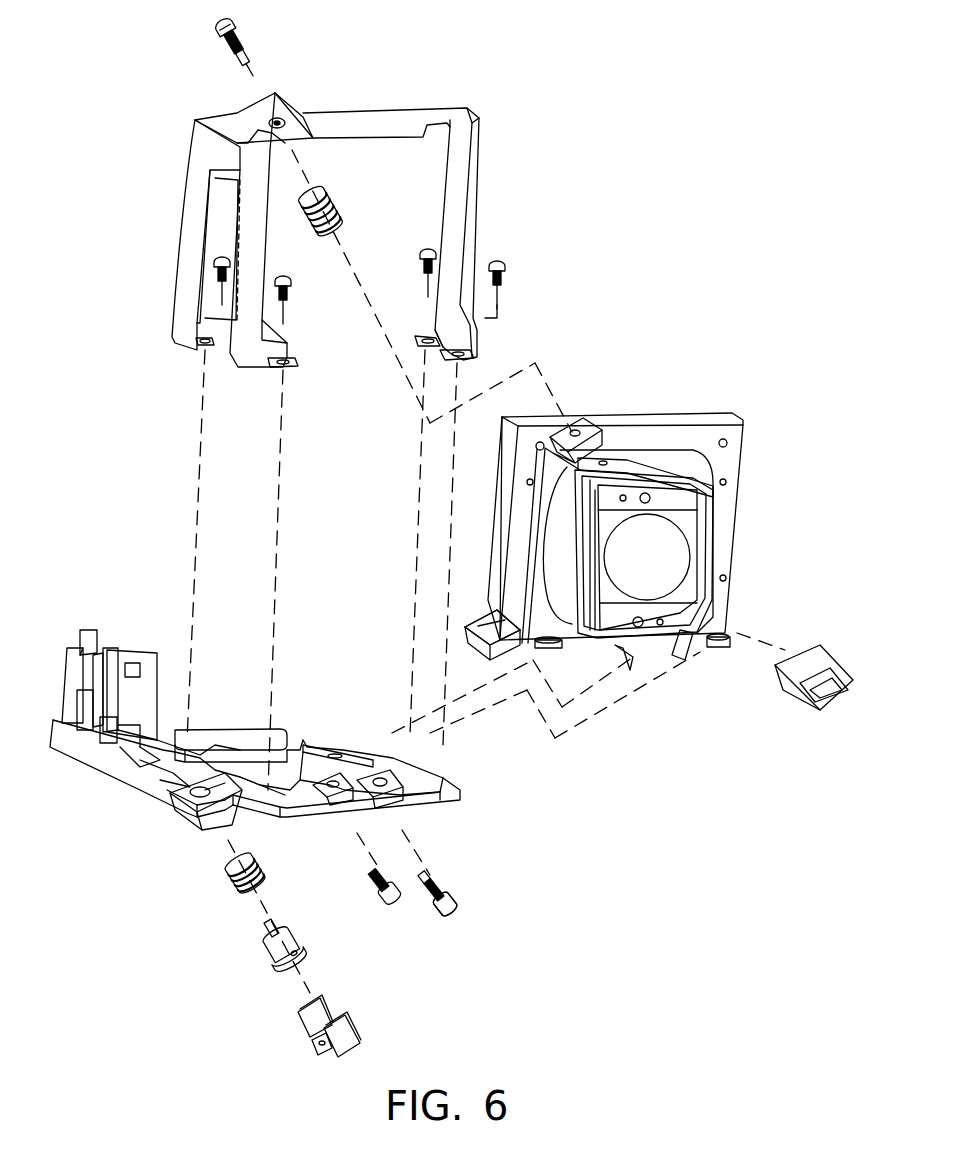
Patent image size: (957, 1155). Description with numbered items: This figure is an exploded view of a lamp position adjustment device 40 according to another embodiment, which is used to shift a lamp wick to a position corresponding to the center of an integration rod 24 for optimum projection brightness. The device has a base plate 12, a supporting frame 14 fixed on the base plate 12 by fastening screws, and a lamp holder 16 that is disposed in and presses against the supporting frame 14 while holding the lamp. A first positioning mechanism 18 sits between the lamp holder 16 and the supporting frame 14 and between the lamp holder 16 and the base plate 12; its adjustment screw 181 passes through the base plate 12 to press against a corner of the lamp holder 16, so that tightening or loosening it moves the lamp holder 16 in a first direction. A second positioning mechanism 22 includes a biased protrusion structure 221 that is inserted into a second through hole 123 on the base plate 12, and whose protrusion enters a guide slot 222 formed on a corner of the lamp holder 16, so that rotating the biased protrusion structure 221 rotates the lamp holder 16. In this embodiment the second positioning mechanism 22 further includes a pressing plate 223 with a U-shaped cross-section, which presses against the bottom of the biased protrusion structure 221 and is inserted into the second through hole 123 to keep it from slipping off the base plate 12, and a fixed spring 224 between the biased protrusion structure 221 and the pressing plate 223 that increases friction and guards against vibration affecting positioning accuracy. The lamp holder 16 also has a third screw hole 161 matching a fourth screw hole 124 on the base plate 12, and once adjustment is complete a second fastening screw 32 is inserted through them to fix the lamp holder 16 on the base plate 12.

The camera module assembly 40 is at (766, 178).
The supporting frame 14 is at (480, 107).
The lamp holder 16 is at (676, 408).
The third screw hole 161 is at (625, 650).
The base plate 12 is at (252, 720).
The fourth screw hole 124 is at (300, 745).
The second through hole 123 is at (215, 832).
The second positioning mechanism 22 is at (492, 627).
The guide slot 222 is at (490, 625).
The biased protrusion structure 221 is at (307, 952).
The pressing plate 223 is at (297, 1013).
The fixed spring 224 is at (228, 887).
The integration rod 24 is at (802, 692).
The second fastening screw 32 is at (378, 908).
The first positioning mechanism 18 is at (458, 898).
The adjustment screw 181 is at (445, 904).